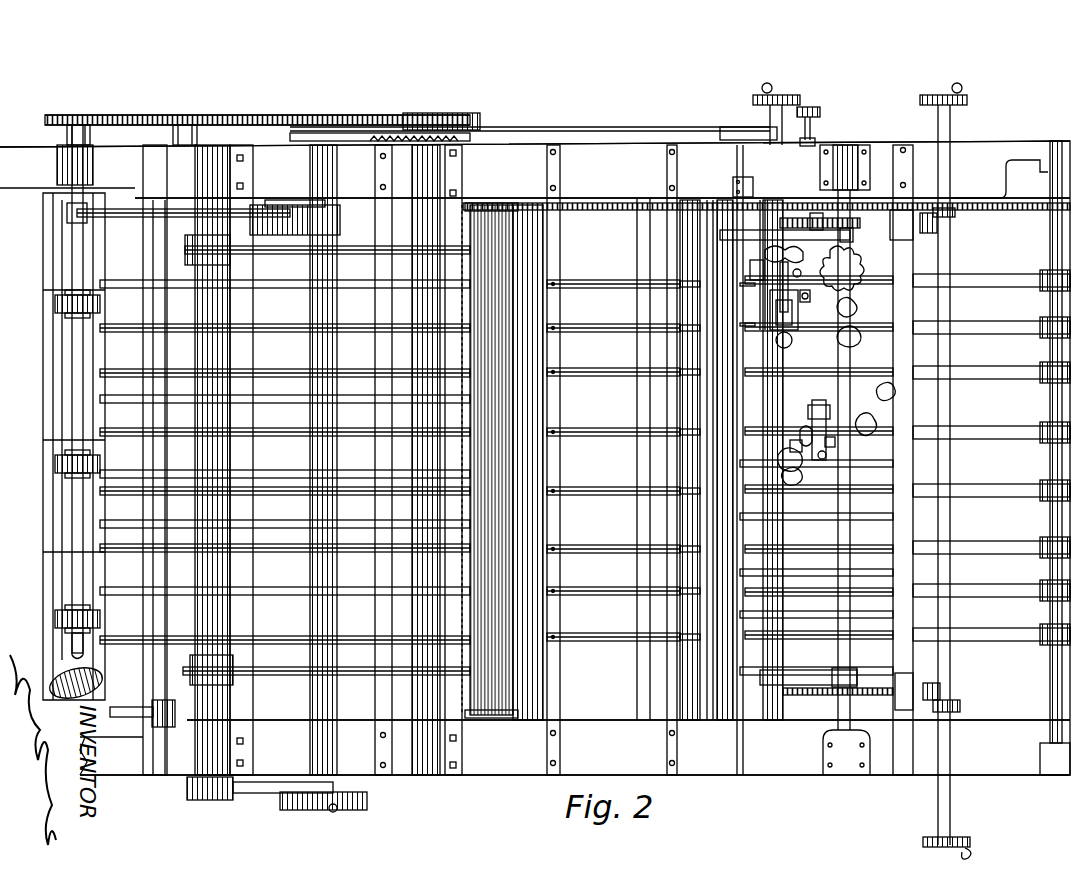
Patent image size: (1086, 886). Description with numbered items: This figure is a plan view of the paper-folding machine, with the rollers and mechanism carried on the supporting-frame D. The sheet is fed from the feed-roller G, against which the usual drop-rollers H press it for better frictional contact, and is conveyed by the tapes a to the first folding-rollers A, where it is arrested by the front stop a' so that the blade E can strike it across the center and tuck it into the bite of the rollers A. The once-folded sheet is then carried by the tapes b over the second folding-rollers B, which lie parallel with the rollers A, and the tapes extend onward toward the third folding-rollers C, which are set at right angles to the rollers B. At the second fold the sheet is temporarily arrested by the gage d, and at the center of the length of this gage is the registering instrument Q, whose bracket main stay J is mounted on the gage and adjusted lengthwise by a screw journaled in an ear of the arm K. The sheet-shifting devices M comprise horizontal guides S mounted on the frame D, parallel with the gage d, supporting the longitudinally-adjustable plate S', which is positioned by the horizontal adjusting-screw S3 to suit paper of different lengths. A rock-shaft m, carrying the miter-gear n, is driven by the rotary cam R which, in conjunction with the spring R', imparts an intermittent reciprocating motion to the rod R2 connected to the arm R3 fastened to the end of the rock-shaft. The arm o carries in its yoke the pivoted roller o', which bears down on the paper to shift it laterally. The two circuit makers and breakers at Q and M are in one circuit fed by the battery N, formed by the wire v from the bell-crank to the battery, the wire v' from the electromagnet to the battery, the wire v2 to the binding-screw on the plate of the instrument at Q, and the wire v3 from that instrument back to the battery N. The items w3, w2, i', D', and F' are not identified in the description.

The rotary cam R is at (362, 136).
The spring R' is at (262, 119).
The rod R2 is at (604, 128).
The arm R3 is at (758, 128).
The adjusting knob w3 is at (818, 111).
The adjusting nut w2 is at (815, 134).
The first folding-rollers A is at (504, 461).
The second folding-rollers B is at (709, 460).
The supporting-frame D is at (535, 458).
The folding-blade E is at (470, 410).
The feed-roller G is at (45, 395).
The drop-rollers H is at (55, 305).
The tapes a is at (268, 463).
The front stop a' is at (285, 532).
The tapes b is at (922, 598).
The gage d is at (812, 535).
The horizontal guides S is at (821, 460).
The horizontal adjusting-screw S3 is at (786, 210).
The longitudinally-adjustable plate S' is at (760, 343).
The rock-shaft m is at (745, 162).
The sheet-shifting devices M is at (768, 305).
The miter-gear n is at (745, 270).
The arm o is at (780, 297).
The roller o' is at (792, 479).
The wire v is at (913, 471).
The wire v' is at (849, 296).
The wire v2 is at (800, 410).
The wire v3 is at (862, 430).
The battery N is at (868, 388).
The pin i' is at (790, 432).
The arm K is at (832, 430).
The main stay J is at (824, 455).
The registering instrument Q is at (778, 452).
The third folding-rollers C is at (737, 575).
The bracket D' is at (785, 359).
The arm F' is at (720, 521).